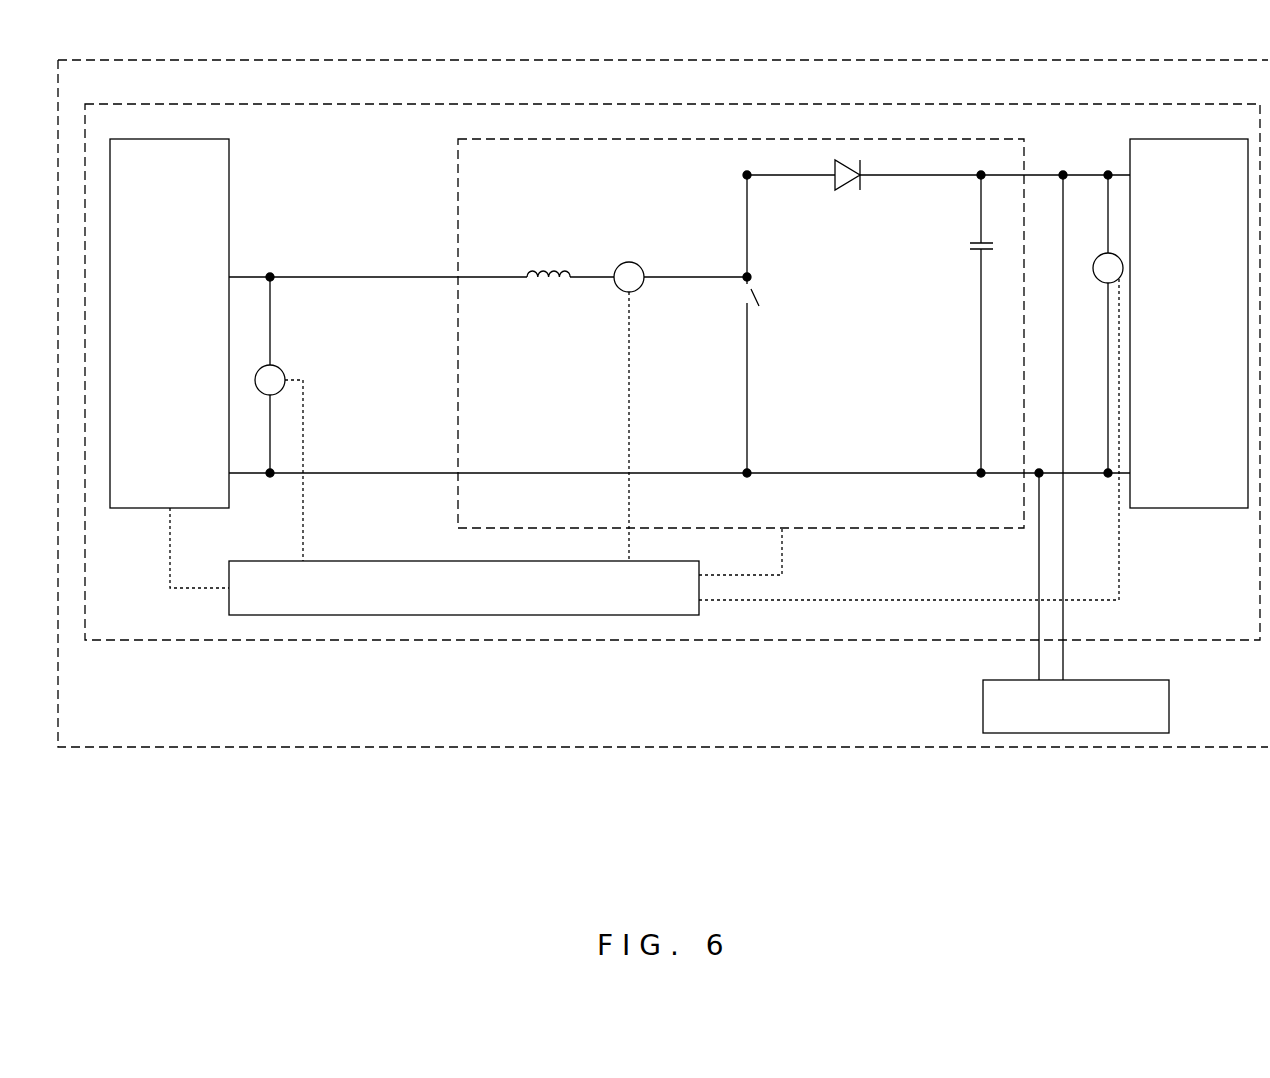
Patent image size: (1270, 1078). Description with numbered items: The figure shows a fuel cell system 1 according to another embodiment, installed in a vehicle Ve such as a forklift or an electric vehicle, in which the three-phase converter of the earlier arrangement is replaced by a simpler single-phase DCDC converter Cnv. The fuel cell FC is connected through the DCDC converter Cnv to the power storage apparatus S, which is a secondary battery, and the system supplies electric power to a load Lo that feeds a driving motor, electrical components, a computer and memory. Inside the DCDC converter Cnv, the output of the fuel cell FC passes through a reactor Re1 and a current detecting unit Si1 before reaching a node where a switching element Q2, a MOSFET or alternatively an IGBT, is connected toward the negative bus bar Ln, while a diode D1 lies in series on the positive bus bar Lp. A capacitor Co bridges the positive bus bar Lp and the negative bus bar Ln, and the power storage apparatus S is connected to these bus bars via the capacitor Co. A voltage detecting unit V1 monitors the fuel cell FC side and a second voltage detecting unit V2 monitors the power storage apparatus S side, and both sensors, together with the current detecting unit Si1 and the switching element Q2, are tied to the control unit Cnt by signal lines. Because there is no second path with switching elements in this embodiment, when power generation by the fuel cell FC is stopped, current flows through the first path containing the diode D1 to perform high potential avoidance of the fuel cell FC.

The vehicle Ve is at (1168, 60).
The fuel cell system 1 is at (1168, 102).
The DCDC converter Cnv is at (996, 138).
The fuel cell FC is at (176, 136).
The power storage apparatus S is at (1134, 138).
The control unit Cnt is at (608, 559).
The load Lo is at (994, 676).
The positive bus bar Lp is at (804, 179).
The negative bus bar Ln is at (802, 478).
The reactor Re1 is at (534, 276).
The current detecting unit Si1 is at (616, 274).
The voltage detecting unit V1 is at (259, 366).
The switching element Q2 is at (757, 291).
The diode D1 is at (840, 185).
The capacitor Co is at (987, 250).
The voltage detecting unit V2 is at (1096, 256).